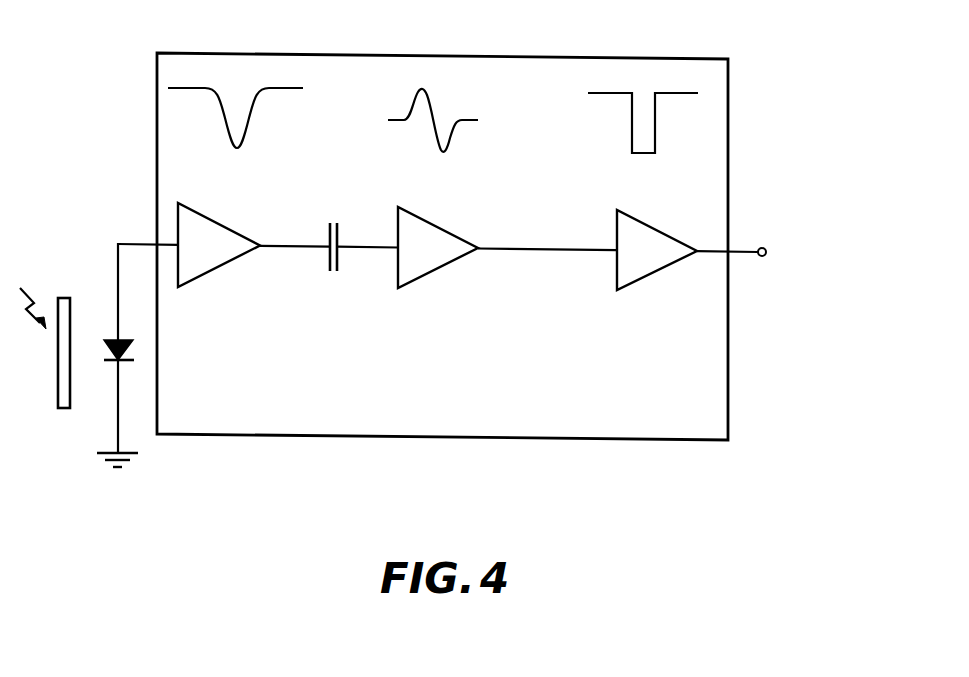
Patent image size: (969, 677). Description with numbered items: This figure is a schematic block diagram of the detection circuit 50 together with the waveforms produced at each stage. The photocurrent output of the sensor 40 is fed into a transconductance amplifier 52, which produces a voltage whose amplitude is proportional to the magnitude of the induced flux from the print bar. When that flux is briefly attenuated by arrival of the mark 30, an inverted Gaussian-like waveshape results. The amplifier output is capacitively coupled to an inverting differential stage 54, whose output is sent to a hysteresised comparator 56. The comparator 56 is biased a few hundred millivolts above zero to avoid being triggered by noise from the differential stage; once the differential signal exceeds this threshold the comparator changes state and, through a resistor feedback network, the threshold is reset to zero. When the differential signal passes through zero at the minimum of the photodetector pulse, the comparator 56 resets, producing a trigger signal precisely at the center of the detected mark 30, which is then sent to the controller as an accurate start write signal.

The mark 30 is at (57, 377).
The sensor 40 is at (107, 342).
The detection circuit 50 is at (302, 53).
The transconductance amplifier 52 is at (222, 265).
The inverting differential stage 54 is at (437, 270).
The hysteresised comparator 56 is at (655, 272).